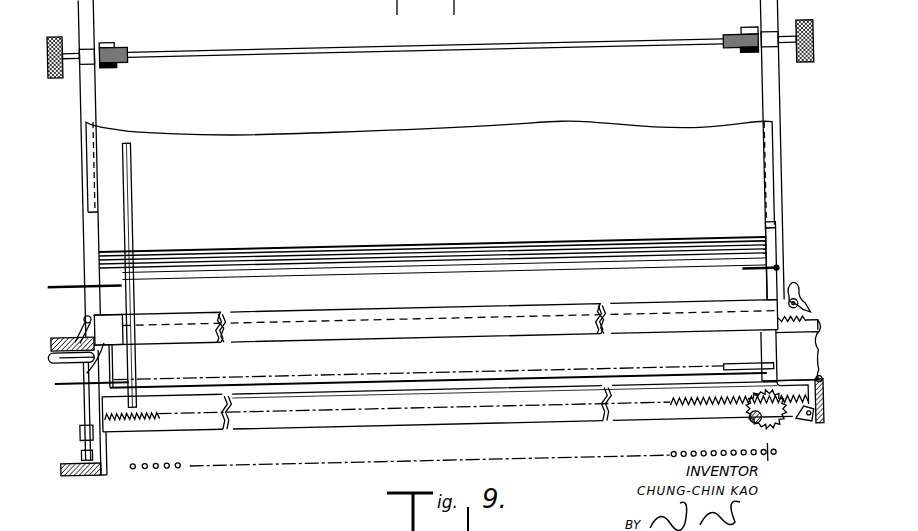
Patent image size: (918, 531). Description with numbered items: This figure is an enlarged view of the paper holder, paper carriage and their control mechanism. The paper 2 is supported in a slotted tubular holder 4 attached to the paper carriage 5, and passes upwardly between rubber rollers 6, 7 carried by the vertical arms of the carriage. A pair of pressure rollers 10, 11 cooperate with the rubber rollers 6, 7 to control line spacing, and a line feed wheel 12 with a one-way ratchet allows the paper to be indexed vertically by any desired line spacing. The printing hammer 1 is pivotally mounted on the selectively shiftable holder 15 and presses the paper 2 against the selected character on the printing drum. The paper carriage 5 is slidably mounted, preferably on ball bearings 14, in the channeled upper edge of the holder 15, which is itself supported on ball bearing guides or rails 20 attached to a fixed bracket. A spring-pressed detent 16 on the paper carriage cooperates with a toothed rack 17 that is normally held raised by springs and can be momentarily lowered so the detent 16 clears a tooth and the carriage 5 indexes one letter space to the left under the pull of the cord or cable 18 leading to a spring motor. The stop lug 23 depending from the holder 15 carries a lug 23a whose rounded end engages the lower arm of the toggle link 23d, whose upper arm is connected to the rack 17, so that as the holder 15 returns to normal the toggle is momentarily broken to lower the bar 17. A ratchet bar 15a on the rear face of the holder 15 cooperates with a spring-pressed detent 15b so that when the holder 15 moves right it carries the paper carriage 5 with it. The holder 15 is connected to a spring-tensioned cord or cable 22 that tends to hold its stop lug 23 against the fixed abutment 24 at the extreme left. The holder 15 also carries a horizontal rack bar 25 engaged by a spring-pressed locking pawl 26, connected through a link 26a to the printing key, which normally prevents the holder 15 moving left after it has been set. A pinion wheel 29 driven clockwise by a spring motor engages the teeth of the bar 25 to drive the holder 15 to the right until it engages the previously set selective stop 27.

The printing hammer 1 is at (134, 160).
The paper 2 is at (106, 157).
The tubular holder 4 is at (780, 284).
The paper carriage 5 is at (779, 104).
The rubber roller 6 is at (114, 45).
The rubber roller 7 is at (754, 42).
The pressure roller 10 is at (128, 51).
The pressure roller 11 is at (738, 49).
The line feed wheel 12 is at (60, 34).
The ball bearings 14 is at (774, 243).
The selectively shiftable holder 15 is at (770, 358).
The ratchet bar 15a is at (778, 362).
The spring-pressed detent 15b is at (812, 305).
The spring-pressed detent 16 is at (74, 327).
The toothed rack 17 is at (70, 361).
The cord or cable 18 is at (69, 288).
The ball bearing guides or rails 20 is at (770, 375).
The spring-tensioned cord or cable 22 is at (70, 388).
The stop lug 23 is at (103, 472).
The lug 23a is at (78, 441).
The toggle link 23d is at (104, 343).
The fixed abutment 24 is at (74, 476).
The horizontal rack bar 25 is at (150, 420).
The spring-pressed locking pawl 26 is at (797, 432).
The link 26a is at (821, 430).
The selective stop 27 is at (168, 471).
The pinion wheel 29 is at (728, 441).